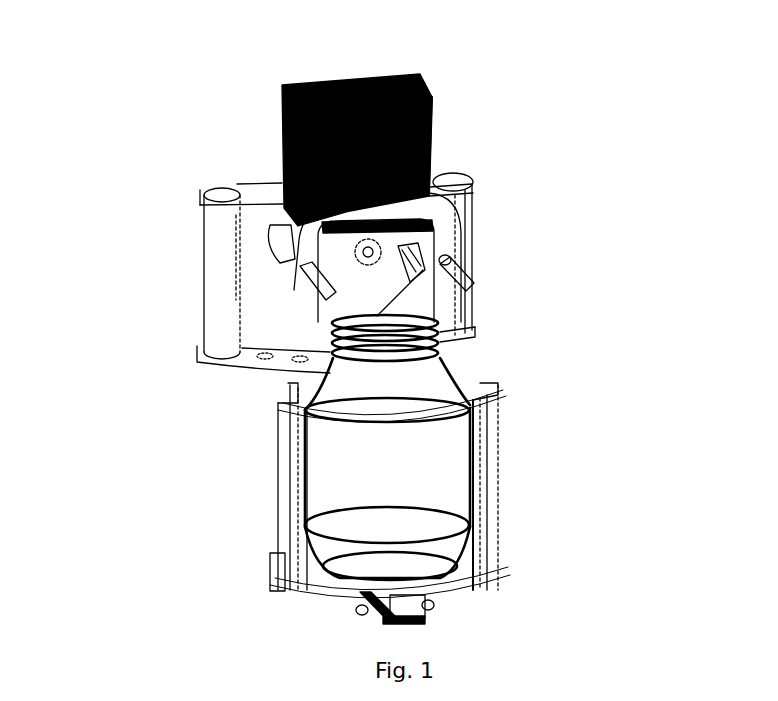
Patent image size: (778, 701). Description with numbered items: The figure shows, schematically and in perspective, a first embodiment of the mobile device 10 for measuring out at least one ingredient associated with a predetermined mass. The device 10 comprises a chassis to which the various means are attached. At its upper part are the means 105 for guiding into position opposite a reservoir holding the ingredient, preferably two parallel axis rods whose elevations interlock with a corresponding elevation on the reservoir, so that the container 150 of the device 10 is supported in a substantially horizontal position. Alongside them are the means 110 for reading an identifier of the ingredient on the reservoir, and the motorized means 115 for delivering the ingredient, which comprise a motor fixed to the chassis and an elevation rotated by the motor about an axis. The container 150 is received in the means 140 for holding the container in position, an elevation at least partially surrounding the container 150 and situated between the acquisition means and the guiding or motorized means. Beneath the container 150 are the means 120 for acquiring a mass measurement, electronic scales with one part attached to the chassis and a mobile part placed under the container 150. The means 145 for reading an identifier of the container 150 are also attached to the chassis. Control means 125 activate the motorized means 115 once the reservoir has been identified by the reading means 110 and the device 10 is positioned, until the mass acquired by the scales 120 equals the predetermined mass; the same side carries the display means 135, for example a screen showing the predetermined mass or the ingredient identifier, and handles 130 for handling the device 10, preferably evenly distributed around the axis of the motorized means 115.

The mobile device 10 is at (486, 74).
The means for guiding into position 105 is at (460, 272).
The means for reading an identifier of an ingredient 110 is at (280, 162).
The motorized means for delivering the ingredient 115 is at (357, 255).
The means for acquiring a mass measurement 120 is at (312, 578).
The control means 125 is at (433, 127).
The handles 130 is at (213, 308).
The means for displaying 135 is at (264, 105).
The means for holding the container in position 140 is at (480, 388).
The means for reading an identifier of a container 145 is at (519, 482).
The container 150 is at (334, 492).